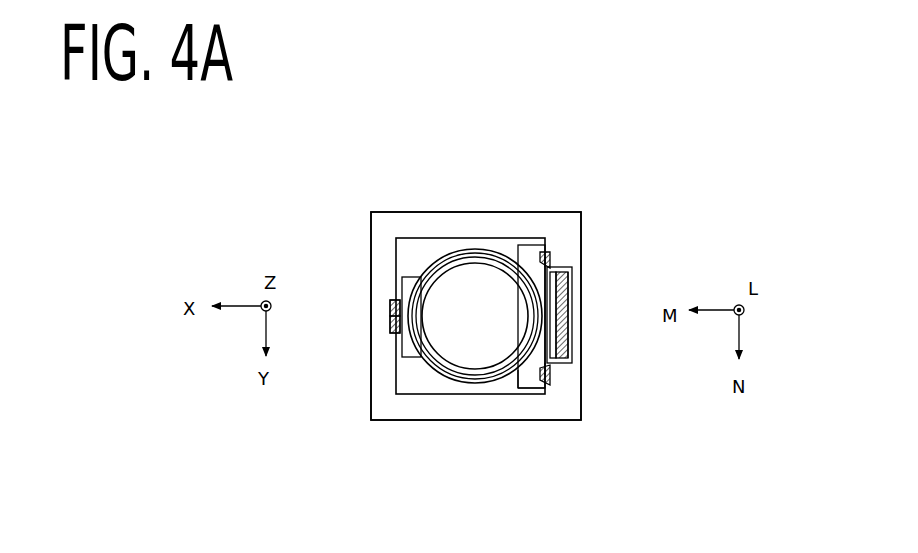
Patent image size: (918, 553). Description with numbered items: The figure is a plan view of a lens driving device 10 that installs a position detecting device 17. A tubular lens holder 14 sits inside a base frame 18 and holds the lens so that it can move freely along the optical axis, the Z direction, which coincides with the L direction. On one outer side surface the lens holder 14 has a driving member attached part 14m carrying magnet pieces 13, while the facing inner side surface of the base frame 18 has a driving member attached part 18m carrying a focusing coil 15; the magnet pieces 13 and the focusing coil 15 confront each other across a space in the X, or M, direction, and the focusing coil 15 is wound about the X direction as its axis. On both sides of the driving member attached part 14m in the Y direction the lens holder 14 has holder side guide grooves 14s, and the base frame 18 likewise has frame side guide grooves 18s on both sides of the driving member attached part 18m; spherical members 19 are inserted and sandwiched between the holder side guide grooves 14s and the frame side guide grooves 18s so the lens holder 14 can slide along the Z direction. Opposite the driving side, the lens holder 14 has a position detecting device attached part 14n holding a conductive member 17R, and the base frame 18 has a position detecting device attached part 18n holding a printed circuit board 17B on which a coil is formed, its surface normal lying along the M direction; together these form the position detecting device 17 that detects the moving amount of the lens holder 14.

The lens driving device 10 is at (320, 197).
The magnet pieces 13 is at (582, 372).
The lens holder 14 is at (452, 380).
The position detecting device attached part 14n is at (411, 277).
The driving member attached part 14m is at (576, 312).
The holder side guide grooves 14s is at (536, 386).
The focusing coil 15 is at (574, 268).
The position detecting device 17 is at (342, 339).
The printed circuit board 17B is at (390, 311).
The conductive member 17R is at (390, 330).
The base frame 18 is at (505, 223).
The frame side guide grooves 18s is at (546, 252).
The position detecting device attached part 18n is at (391, 302).
The driving member attached part 18m is at (577, 297).
The spherical members 19 is at (549, 384).